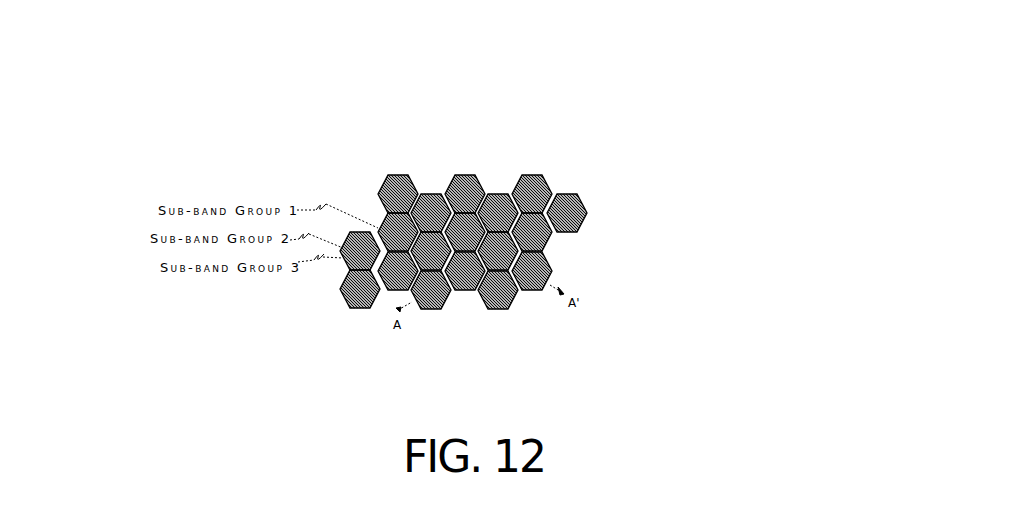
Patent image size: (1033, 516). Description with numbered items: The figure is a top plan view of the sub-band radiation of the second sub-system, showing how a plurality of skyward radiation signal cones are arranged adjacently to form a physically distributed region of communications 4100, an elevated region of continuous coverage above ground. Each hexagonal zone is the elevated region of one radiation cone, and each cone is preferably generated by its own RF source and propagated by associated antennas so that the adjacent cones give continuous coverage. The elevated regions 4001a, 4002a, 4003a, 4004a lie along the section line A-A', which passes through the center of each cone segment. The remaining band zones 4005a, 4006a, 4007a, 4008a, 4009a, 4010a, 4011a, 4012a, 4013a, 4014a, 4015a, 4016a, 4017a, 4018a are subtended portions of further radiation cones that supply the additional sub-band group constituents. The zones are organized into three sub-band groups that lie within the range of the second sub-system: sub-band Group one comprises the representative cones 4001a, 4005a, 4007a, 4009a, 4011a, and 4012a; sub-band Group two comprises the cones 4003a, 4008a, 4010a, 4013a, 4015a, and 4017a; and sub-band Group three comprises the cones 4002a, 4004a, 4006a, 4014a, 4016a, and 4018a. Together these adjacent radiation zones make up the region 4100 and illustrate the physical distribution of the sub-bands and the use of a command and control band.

The physically distributed region of communications 4100 is at (700, 175).
The elevated region of radiation cone 4001a is at (430, 312).
The elevated region of radiation cone 4002a is at (466, 292).
The elevated region of radiation cone 4003a is at (520, 212).
The elevated region of radiation cone 4004a is at (555, 274).
The band zone 4005a is at (348, 305).
The band zone 4006a is at (400, 290).
The band zone 4007a is at (507, 313).
The band zone 4008a is at (342, 252).
The band zone 4009a is at (383, 223).
The band zone 4010a is at (376, 193).
The band zone 4011a is at (467, 227).
The band zone 4012a is at (547, 245).
The band zone 4013a is at (398, 188).
The band zone 4014a is at (433, 194).
The band zone 4015a is at (467, 176).
The band zone 4016a is at (503, 192).
The band zone 4017a is at (547, 192).
The band zone 4018a is at (583, 203).